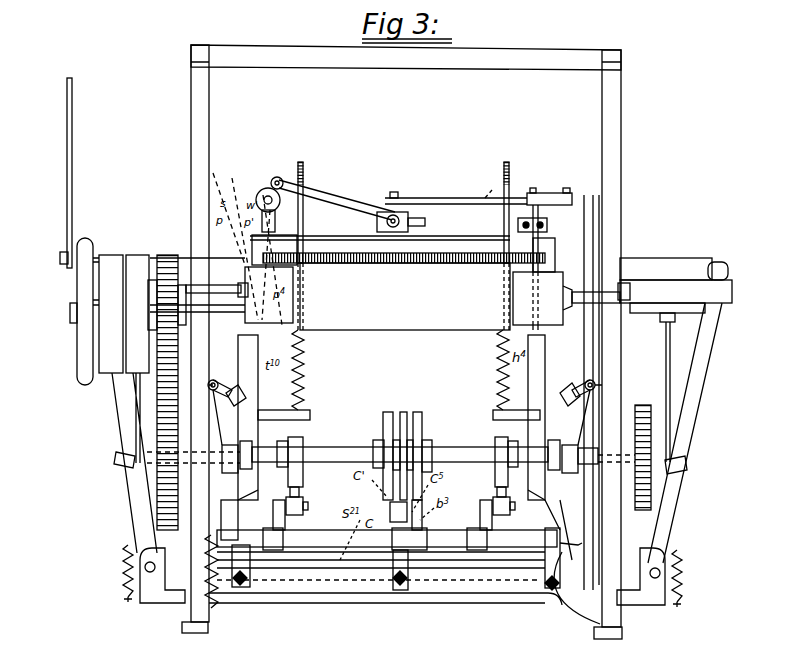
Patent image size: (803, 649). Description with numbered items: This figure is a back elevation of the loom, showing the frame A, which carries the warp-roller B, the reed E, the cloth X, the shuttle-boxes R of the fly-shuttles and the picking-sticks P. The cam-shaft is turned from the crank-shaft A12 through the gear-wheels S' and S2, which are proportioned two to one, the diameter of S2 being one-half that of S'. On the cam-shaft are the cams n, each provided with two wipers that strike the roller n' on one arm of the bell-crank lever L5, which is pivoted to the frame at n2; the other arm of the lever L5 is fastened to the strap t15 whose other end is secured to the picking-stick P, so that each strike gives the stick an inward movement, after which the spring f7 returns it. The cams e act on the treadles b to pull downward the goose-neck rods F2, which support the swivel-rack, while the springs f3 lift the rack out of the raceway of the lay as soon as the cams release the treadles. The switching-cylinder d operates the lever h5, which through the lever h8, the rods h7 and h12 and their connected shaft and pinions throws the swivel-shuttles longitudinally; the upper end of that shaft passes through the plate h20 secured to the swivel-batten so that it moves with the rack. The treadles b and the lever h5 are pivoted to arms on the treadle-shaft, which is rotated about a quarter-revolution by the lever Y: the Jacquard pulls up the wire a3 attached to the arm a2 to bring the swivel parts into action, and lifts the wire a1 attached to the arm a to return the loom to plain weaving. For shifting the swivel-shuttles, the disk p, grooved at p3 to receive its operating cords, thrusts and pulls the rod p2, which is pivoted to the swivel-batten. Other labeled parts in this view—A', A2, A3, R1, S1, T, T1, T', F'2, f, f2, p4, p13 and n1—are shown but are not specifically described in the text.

The frame of the loom A is at (253, 239).
The drum A' is at (124, 314).
The hand wheel A2 is at (77, 280).
The rod A3 is at (72, 172).
The crank-shaft A12 is at (70, 313).
The warp-roller B is at (566, 298).
The reed E is at (555, 248).
The cloth X is at (405, 296).
The lever Y is at (582, 543).
The shuttle-boxes of the fly-shuttles R is at (155, 255).
The roller rod R1 is at (672, 405).
The gear-wheel S' is at (391, 440).
The gear shaft S1 is at (150, 468).
The gear-wheel S2 is at (165, 252).
The picking-sticks P is at (123, 505).
The bell-crank lever L5 is at (215, 412).
The standard T is at (395, 533).
The bracket T1 is at (280, 410).
The bracket T' is at (519, 417).
The goose-neck rods F2 is at (305, 166).
The rod F'2 is at (523, 237).
The finger f is at (232, 513).
The arm f2 is at (285, 522).
The springs f3 is at (306, 372).
The spring f7 is at (122, 577).
The disk p is at (269, 198).
The rod p2 is at (355, 200).
The groove p3 is at (445, 198).
The slide block p4 is at (425, 222).
The stop p13 is at (398, 192).
The lever h5 is at (388, 505).
The rod h7 is at (325, 560).
The lever h8 is at (545, 193).
The rod h12 is at (496, 187).
The plate h20 is at (547, 225).
The cams n is at (401, 417).
The lever n1 is at (230, 387).
The pivot n2 is at (208, 383).
The roller n' is at (410, 459).
The cams e is at (303, 480).
The switching-cylinder d is at (420, 425).
The treadles b is at (308, 506).
The arm a is at (559, 530).
The wire a1 is at (593, 215).
The arm a2 is at (571, 578).
The wire a3 is at (600, 225).
The strap t15 is at (114, 456).